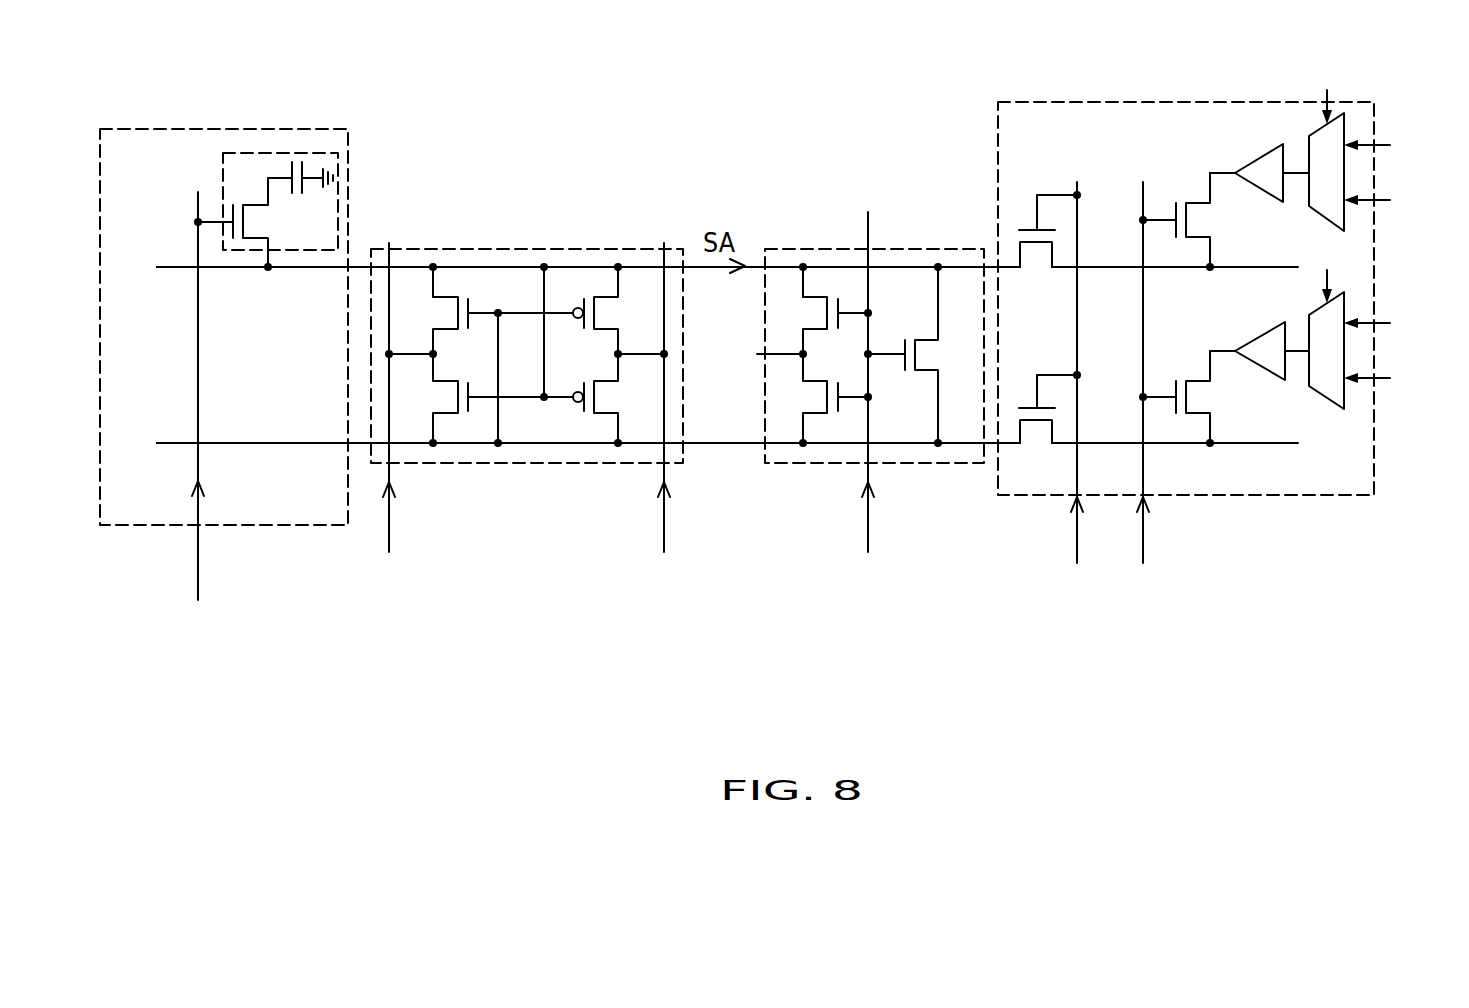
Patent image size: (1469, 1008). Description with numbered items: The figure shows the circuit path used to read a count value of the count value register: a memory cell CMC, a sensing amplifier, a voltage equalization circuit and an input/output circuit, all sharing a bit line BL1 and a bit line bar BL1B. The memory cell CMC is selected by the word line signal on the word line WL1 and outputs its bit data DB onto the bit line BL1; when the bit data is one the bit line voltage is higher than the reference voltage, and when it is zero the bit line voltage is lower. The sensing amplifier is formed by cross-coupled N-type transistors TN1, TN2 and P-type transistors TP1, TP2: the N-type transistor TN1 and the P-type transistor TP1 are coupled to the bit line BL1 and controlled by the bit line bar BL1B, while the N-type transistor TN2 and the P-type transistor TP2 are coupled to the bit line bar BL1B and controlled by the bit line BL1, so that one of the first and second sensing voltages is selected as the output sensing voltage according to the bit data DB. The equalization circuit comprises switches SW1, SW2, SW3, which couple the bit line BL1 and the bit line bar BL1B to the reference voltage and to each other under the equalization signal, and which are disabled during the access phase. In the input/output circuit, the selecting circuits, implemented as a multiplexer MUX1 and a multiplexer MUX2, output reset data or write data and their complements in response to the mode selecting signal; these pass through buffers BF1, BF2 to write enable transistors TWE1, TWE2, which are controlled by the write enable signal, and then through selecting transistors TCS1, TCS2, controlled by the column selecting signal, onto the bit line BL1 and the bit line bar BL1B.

The memory cell CMC is at (223, 178).
The bit data DB is at (328, 258).
The word line WL1 is at (198, 348).
The bit line BL1 is at (227, 270).
The bit line bar BL1B is at (227, 446).
The N-type transistor TN1 is at (448, 308).
The N-type transistor TN2 is at (470, 400).
The P-type transistor TP1 is at (576, 308).
The P-type transistor TP2 is at (597, 400).
The switch SW1 is at (820, 308).
The switch SW2 is at (820, 400).
The switch SW3 is at (941, 355).
The selecting transistor TCS1 is at (1043, 249).
The selecting transistor TCS2 is at (1041, 427).
The write enable transistor TWE1 is at (1204, 222).
The write enable transistor TWE2 is at (1205, 399).
The buffer BF1 is at (1262, 155).
The buffer BF2 is at (1257, 338).
The multiplexer MUX1 is at (1347, 222).
The multiplexer MUX2 is at (1325, 400).